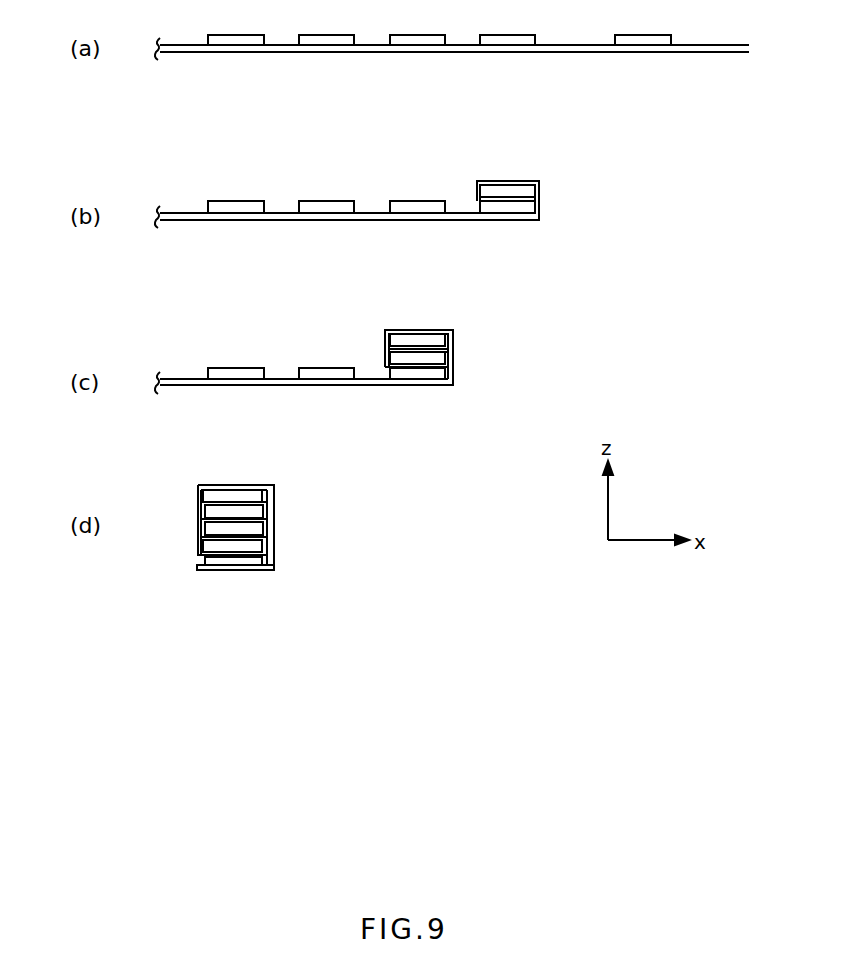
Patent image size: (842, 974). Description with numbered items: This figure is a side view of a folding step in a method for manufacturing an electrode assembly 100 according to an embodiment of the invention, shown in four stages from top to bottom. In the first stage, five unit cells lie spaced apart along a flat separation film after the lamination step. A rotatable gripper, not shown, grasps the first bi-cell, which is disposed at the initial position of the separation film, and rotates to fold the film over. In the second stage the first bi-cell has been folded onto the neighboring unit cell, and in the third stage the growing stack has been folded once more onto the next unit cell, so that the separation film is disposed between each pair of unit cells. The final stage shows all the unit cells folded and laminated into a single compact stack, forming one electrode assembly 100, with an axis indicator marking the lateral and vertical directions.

The electrode assembly 100 is at (267, 506).